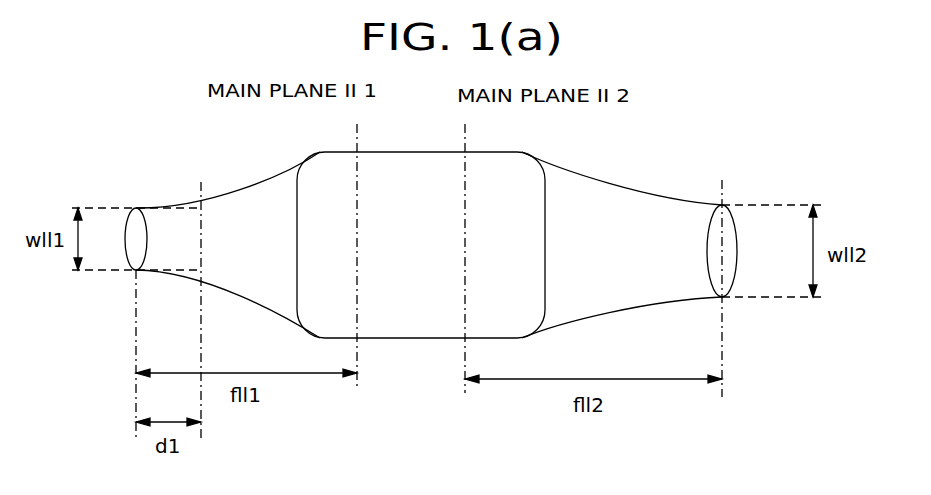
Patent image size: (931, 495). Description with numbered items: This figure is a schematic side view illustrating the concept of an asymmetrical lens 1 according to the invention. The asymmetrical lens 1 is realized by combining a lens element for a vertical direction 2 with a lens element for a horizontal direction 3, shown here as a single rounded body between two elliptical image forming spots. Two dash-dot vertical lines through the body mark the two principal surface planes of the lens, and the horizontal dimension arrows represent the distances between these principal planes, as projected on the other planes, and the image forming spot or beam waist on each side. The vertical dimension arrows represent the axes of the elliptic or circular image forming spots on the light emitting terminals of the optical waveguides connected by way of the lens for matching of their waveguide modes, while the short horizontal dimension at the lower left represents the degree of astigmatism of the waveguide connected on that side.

The asymmetrical lens 1 is at (406, 340).
The lens element for a vertical direction 2 is at (323, 162).
The lens element for a horizontal direction 3 is at (518, 164).